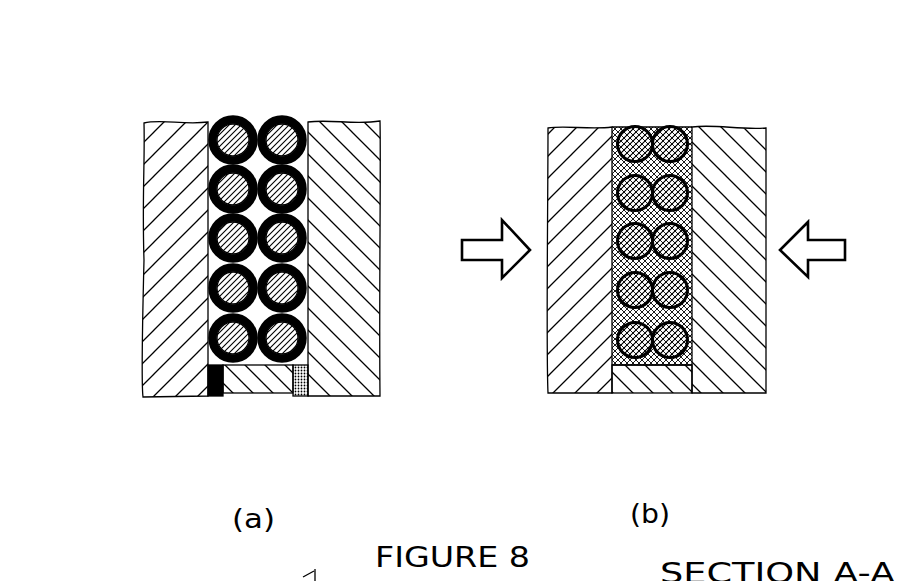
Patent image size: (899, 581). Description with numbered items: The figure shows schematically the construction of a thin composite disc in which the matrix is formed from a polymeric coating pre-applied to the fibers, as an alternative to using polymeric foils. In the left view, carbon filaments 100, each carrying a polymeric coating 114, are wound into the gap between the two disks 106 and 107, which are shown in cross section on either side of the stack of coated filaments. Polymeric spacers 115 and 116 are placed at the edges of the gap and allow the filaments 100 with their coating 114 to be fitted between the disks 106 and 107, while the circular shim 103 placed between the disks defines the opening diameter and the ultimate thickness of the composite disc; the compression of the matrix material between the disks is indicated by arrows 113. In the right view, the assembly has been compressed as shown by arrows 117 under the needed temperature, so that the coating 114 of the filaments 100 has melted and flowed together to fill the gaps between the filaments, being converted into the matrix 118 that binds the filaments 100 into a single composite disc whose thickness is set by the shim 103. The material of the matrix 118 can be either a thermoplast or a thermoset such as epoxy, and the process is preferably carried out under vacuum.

The carbon filaments 100 is at (277, 132).
The circular shim 103 is at (662, 378).
The disk 106 is at (165, 143).
The disk 107 is at (353, 140).
The arrows 113 is at (271, 385).
The coating 114 is at (237, 121).
The polymeric spacer 115 is at (215, 396).
The polymeric spacer 116 is at (300, 396).
The arrows 117 is at (495, 250).
The matrix 118 is at (683, 127).